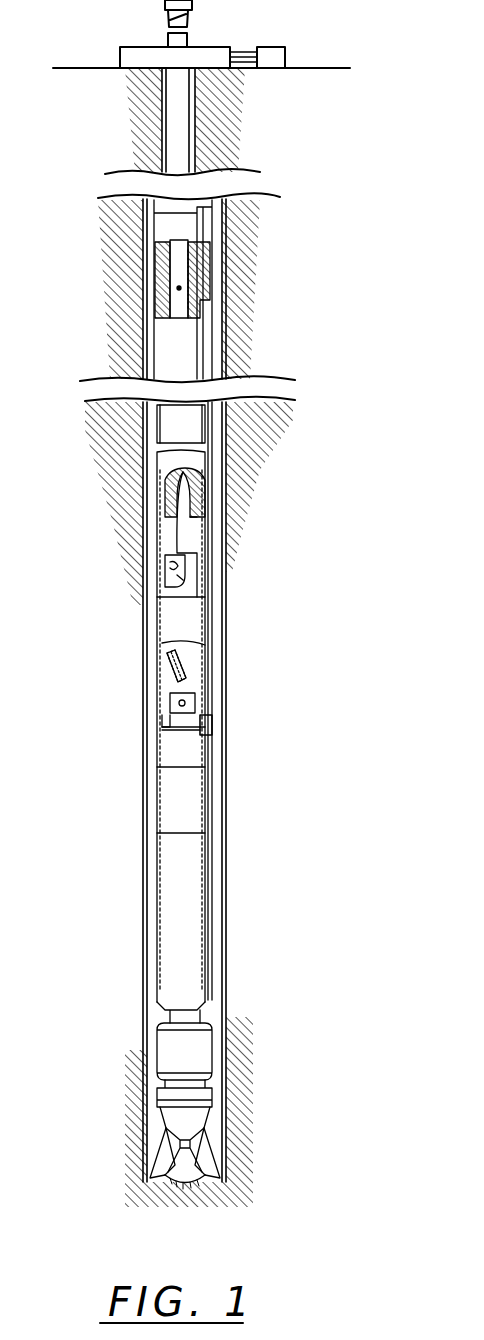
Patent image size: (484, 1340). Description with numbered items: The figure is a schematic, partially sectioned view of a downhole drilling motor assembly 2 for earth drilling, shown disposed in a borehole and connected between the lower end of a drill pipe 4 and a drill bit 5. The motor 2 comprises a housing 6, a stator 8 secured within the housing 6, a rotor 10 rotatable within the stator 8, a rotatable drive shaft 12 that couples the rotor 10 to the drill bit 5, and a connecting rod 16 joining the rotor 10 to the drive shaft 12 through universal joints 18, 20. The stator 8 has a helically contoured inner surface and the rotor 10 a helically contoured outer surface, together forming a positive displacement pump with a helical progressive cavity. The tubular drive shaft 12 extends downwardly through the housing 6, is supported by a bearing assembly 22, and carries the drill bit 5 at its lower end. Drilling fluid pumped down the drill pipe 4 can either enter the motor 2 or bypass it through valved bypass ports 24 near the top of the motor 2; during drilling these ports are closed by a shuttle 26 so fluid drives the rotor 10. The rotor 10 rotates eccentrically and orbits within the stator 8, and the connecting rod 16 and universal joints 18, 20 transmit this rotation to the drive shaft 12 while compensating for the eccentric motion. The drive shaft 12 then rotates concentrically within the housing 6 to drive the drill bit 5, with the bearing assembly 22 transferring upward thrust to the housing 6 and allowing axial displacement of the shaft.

The drilling motor assembly 2 is at (213, 553).
The drill pipe 4 is at (190, 207).
The drill bit 5 is at (215, 1170).
The housing 6 is at (162, 892).
The stator 8 is at (167, 477).
The rotor 10 is at (170, 532).
The drive shaft 12 is at (173, 725).
The connecting rod 16 is at (187, 662).
The universal joint 18 is at (165, 560).
The universal joint 20 is at (193, 707).
The bearing assembly 22 is at (213, 722).
The valved bypass ports 24 is at (193, 305).
The shuttle 26 is at (170, 295).